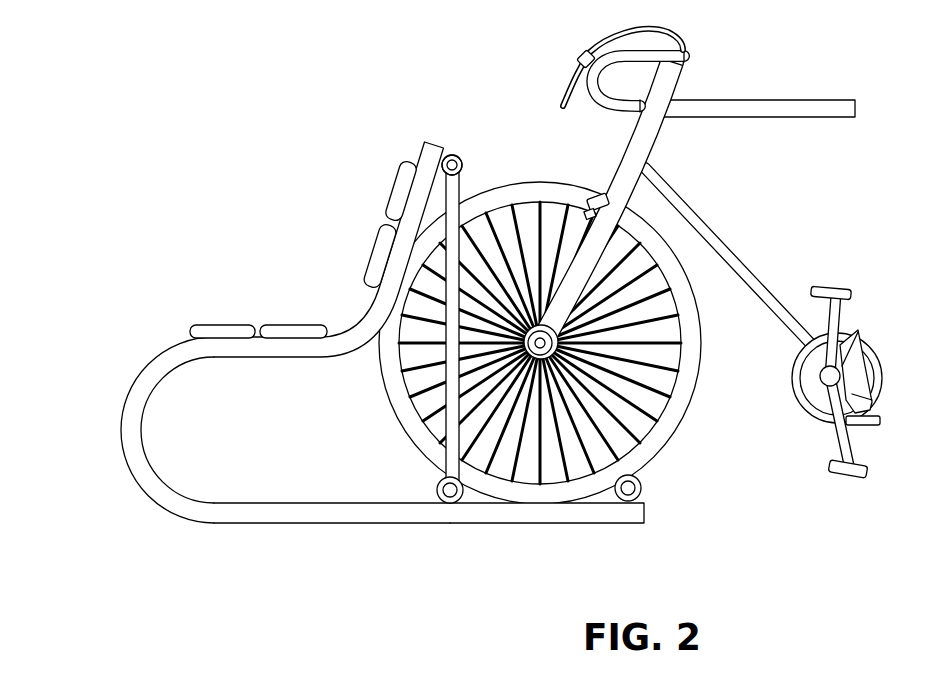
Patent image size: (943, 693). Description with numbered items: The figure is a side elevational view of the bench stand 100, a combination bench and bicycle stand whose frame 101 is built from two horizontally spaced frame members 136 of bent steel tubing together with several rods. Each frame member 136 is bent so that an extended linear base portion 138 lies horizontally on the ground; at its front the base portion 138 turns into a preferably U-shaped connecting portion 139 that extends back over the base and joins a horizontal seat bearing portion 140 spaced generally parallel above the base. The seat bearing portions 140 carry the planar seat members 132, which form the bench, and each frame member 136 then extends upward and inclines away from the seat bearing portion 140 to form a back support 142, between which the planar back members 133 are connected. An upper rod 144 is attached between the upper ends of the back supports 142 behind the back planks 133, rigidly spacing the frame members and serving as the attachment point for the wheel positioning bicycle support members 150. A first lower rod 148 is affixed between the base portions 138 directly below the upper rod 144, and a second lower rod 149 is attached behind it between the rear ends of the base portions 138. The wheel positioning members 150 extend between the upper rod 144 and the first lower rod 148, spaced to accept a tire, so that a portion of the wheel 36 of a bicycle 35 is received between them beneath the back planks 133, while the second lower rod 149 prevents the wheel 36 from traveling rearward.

The bicycle 35 is at (733, 100).
The bicycle wheel 36 is at (680, 425).
The bench stand 100 is at (238, 540).
The frame 101 is at (560, 525).
The seat members 132 is at (220, 325).
The back members 133 is at (393, 185).
The frame member 136 is at (333, 368).
The base portion 138 is at (447, 525).
The connecting portion 139 is at (122, 425).
The seat bearing portion 140 is at (265, 360).
The back support 142 is at (455, 157).
The upper rod 144 is at (460, 162).
The first lower rod 148 is at (437, 488).
The second lower rod 149 is at (642, 490).
The wheel positioning bicycle support member 150 is at (462, 187).